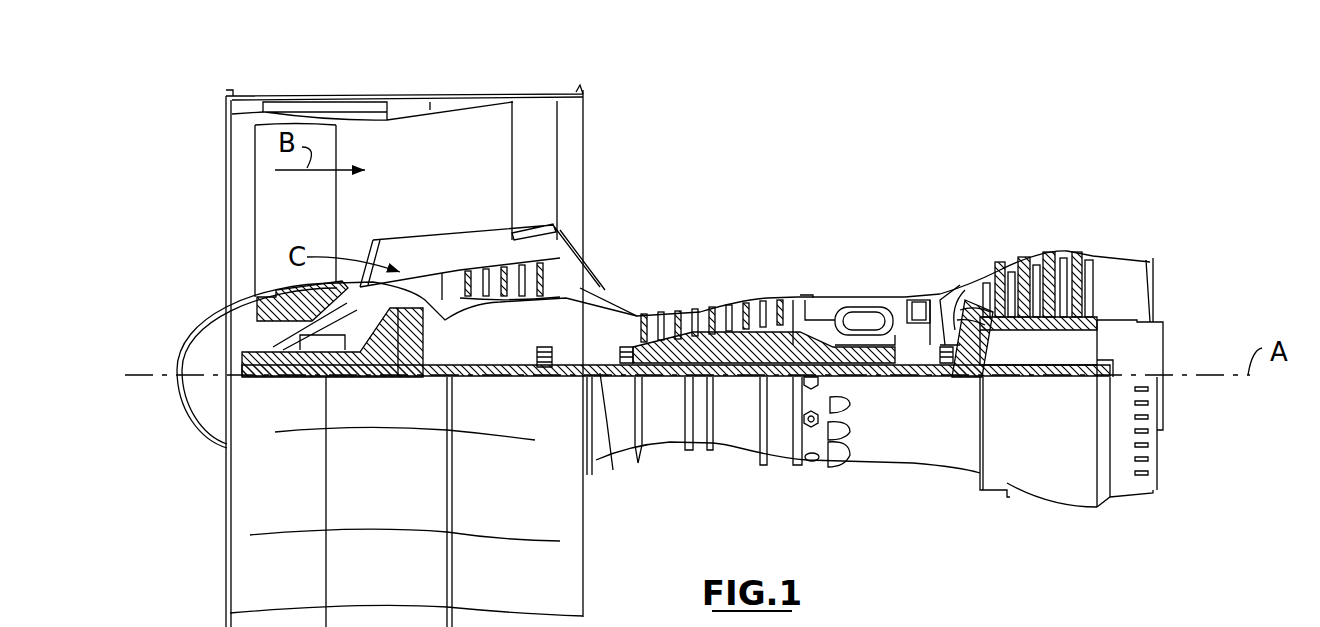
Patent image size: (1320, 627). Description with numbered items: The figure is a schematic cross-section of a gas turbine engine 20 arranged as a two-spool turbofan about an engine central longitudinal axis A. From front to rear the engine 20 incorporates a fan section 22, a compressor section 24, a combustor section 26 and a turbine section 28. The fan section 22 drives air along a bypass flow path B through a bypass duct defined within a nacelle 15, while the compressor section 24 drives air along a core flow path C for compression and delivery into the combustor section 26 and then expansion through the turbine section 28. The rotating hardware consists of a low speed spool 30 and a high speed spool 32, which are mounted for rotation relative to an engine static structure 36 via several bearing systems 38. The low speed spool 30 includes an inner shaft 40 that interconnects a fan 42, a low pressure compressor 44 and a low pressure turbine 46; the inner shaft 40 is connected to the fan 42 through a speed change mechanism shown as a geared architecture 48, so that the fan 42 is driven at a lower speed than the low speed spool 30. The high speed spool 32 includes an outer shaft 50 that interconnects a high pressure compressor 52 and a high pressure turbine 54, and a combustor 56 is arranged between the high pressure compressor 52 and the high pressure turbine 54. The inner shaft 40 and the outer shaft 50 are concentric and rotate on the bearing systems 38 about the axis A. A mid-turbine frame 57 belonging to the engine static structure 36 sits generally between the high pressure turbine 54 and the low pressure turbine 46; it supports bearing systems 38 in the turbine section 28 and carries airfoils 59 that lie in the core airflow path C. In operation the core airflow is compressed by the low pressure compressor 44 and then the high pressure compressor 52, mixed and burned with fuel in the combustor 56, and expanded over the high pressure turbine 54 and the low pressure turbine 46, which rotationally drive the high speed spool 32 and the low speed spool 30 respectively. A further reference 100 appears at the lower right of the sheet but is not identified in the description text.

The nacelle 15 is at (407, 100).
The gas turbine engine 20 is at (872, 136).
The fan section 22 is at (335, 80).
The compressor section 24 is at (636, 276).
The combustor section 26 is at (853, 266).
The turbine section 28 is at (1001, 228).
The low speed spool 30 is at (739, 395).
The high speed spool 32 is at (777, 343).
The engine static structure 36 is at (781, 478).
The bearing systems 38 is at (542, 374).
The inner shaft 40 is at (602, 400).
The fan 42 is at (282, 222).
The low pressure compressor 44 is at (508, 287).
The low pressure turbine 46 is at (1043, 270).
The geared architecture 48 is at (400, 360).
The outer shaft 50 is at (866, 370).
The high pressure compressor 52 is at (713, 343).
The high pressure turbine 54 is at (918, 296).
The combustor 56 is at (852, 316).
The mid-turbine frame 57 is at (966, 274).
The airfoils 59 is at (978, 338).
The component (see following figures) 100 is at (1062, 626).